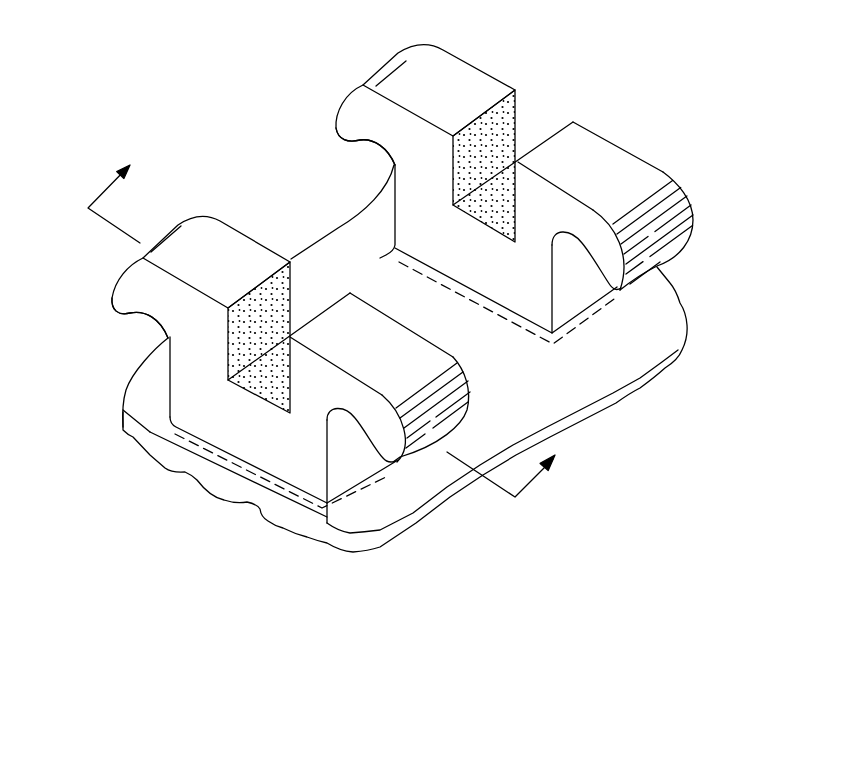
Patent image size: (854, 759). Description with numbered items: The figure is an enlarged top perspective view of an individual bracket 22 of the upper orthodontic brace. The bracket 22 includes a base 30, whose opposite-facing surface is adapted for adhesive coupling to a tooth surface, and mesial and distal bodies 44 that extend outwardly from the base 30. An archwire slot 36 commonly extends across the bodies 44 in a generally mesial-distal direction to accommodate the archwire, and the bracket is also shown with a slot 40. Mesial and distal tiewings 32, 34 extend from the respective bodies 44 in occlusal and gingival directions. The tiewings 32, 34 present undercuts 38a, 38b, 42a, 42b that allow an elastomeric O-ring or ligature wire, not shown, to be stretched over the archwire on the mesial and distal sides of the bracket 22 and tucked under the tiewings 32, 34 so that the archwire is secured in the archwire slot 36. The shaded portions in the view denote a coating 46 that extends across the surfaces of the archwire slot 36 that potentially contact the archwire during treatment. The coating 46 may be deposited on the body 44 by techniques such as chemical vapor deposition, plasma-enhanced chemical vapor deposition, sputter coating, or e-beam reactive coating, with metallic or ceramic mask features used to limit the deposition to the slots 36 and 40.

The bracket 22 is at (685, 96).
The base 30 is at (560, 388).
The mesial tiewing 32 is at (197, 243).
The distal tiewing 34 is at (420, 73).
The archwire slot 36 is at (259, 278).
The undercut 38a is at (133, 340).
The undercut 38b is at (348, 465).
The slot 40 is at (568, 104).
The undercut 42a is at (369, 167).
The undercut 42b is at (582, 290).
The mesial and distal bodies 44 is at (207, 430).
The coating 46 is at (287, 303).